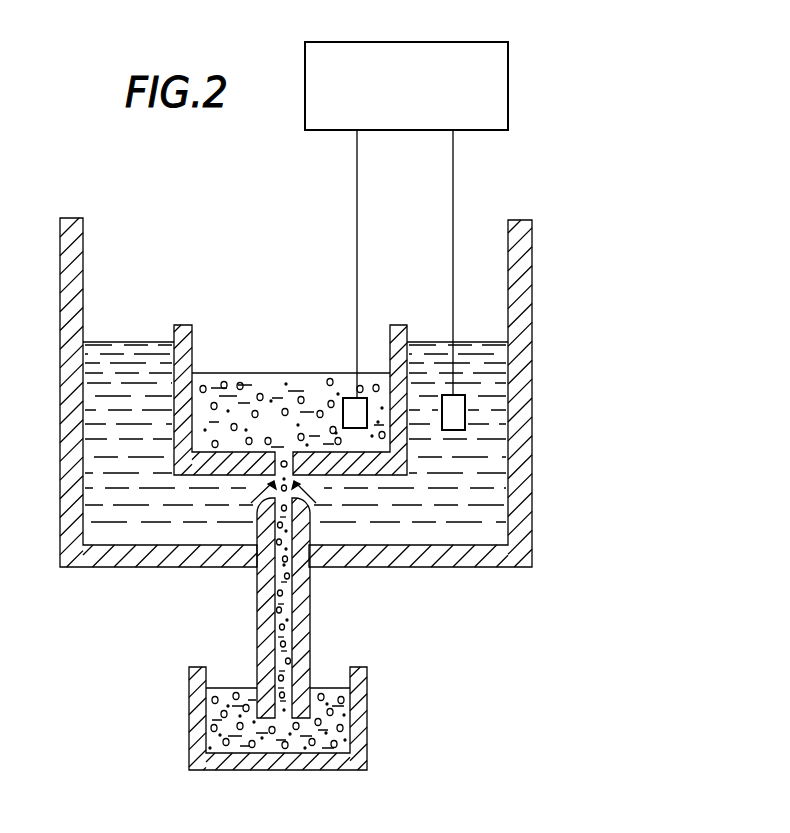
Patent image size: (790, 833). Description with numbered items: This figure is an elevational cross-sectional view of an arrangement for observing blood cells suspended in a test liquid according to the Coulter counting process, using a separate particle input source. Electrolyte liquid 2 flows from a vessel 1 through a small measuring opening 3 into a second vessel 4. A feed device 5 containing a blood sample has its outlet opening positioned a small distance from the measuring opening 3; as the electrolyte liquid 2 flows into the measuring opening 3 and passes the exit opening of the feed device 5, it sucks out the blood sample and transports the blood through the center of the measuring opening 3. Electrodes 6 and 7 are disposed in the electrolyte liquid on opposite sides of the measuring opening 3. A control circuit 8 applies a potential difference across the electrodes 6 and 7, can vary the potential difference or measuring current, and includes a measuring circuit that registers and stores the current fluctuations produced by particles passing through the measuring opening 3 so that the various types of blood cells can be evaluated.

The vessel 1 is at (481, 333).
The electrolyte liquid 2 is at (488, 460).
The measuring opening 3 is at (287, 462).
The vessel 4 is at (336, 367).
The feed device 5 is at (310, 623).
The electrode 6 is at (460, 414).
The electrode 7 is at (360, 402).
The control circuit 8 is at (500, 98).